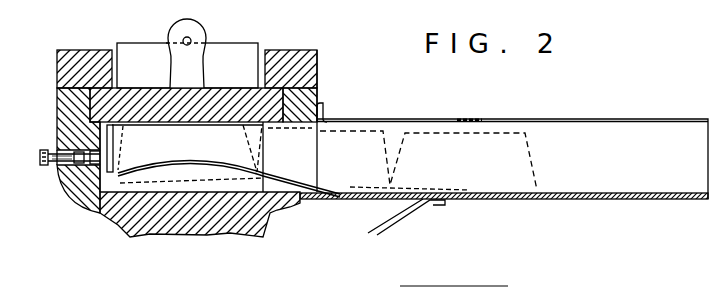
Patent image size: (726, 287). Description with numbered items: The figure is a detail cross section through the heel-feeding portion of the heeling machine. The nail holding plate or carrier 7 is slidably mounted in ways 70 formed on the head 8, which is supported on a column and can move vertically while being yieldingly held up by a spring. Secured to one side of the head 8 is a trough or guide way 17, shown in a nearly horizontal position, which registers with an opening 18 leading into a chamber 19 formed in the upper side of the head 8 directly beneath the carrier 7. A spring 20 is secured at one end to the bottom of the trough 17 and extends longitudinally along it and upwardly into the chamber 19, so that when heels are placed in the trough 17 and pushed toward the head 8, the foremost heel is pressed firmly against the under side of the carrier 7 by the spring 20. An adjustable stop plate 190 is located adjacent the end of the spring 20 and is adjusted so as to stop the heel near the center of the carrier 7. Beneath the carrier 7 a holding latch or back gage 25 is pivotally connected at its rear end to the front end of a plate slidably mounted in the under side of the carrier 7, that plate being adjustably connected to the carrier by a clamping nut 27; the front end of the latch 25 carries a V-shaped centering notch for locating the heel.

The nail holding plate or carrier 7 is at (139, 52).
The clamping nut 27 is at (199, 36).
The ways 70 is at (77, 80).
The chamber 19 is at (100, 210).
The adjustable stop plate 190 is at (98, 167).
The head 8 is at (130, 235).
The holding latch or back gage 25 is at (168, 133).
The spring 20 is at (178, 165).
The opening 18 is at (323, 122).
The trough or guide way 17 is at (610, 193).